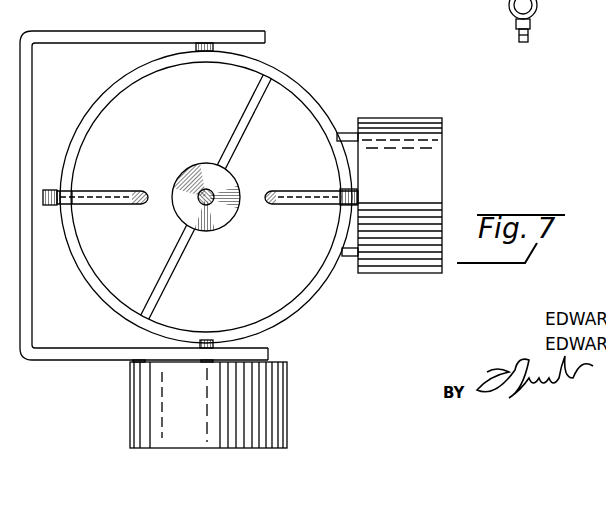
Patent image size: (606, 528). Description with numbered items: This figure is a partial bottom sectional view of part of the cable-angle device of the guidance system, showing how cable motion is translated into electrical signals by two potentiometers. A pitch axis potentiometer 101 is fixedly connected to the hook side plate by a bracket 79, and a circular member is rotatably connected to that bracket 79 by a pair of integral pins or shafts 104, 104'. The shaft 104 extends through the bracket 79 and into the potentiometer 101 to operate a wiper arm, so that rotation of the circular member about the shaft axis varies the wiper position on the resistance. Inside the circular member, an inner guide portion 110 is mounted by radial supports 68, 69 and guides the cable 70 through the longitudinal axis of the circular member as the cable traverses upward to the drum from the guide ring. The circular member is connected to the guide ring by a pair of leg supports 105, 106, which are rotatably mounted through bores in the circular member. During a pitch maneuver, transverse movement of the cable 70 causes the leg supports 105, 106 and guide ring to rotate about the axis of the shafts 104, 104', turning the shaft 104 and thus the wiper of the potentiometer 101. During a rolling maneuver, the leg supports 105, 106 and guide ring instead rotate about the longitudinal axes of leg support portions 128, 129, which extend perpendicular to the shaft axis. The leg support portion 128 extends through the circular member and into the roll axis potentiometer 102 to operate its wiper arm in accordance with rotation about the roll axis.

The bracket 79 is at (32, 89).
The shaft 104' is at (220, 25).
The shaft 104 is at (193, 328).
The inner guide portion 110 is at (192, 176).
The cable 70 is at (213, 205).
The radial support 69 is at (245, 128).
The radial support 68 is at (172, 260).
The leg support 105 is at (123, 204).
The leg support portion 129 is at (52, 192).
The leg support 106 is at (292, 204).
The leg support portion 128 is at (434, 191).
The roll axis potentiometer 102 is at (404, 124).
The pitch axis potentiometer 101 is at (283, 388).